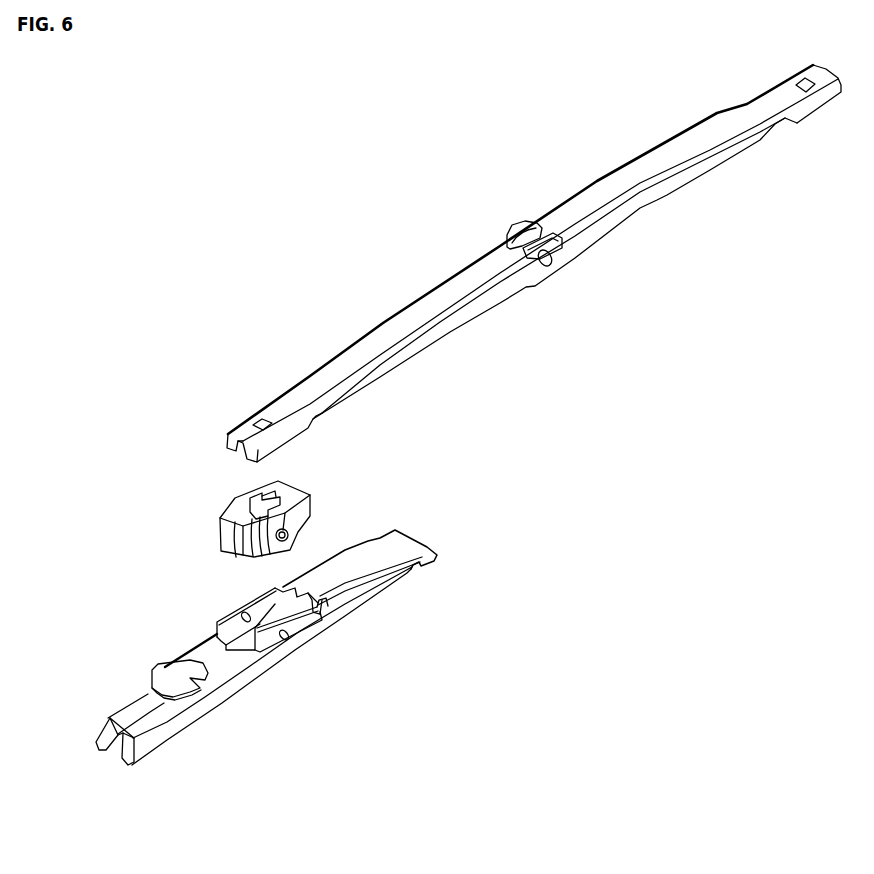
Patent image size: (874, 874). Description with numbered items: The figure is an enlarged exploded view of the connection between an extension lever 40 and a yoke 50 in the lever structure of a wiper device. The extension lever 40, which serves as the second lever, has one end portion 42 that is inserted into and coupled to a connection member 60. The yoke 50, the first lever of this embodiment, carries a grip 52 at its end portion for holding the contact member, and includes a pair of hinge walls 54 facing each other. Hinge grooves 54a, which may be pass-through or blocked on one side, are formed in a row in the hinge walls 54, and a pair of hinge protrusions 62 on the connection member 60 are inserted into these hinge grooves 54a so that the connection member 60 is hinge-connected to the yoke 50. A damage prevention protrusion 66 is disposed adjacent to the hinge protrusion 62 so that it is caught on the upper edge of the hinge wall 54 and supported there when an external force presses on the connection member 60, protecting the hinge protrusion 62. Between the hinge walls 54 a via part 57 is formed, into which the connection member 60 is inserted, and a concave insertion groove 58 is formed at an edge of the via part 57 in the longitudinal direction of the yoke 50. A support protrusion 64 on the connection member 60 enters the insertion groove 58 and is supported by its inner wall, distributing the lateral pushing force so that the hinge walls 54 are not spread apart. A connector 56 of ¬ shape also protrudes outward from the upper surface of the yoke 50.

The extension lever 40 is at (443, 287).
The end portion of the extension lever 42 is at (242, 428).
The yoke 50 is at (274, 687).
The grip 52 is at (140, 757).
The hinge walls 54 is at (225, 654).
The hinge groove 54a is at (238, 607).
The connector 56 is at (150, 672).
The via part 57 is at (293, 612).
The insertion groove 58 is at (310, 590).
The connection member 60 is at (265, 485).
The hinge protrusions 62 is at (297, 540).
The support protrusion 64 is at (300, 483).
The damage prevention protrusion 66 is at (292, 495).